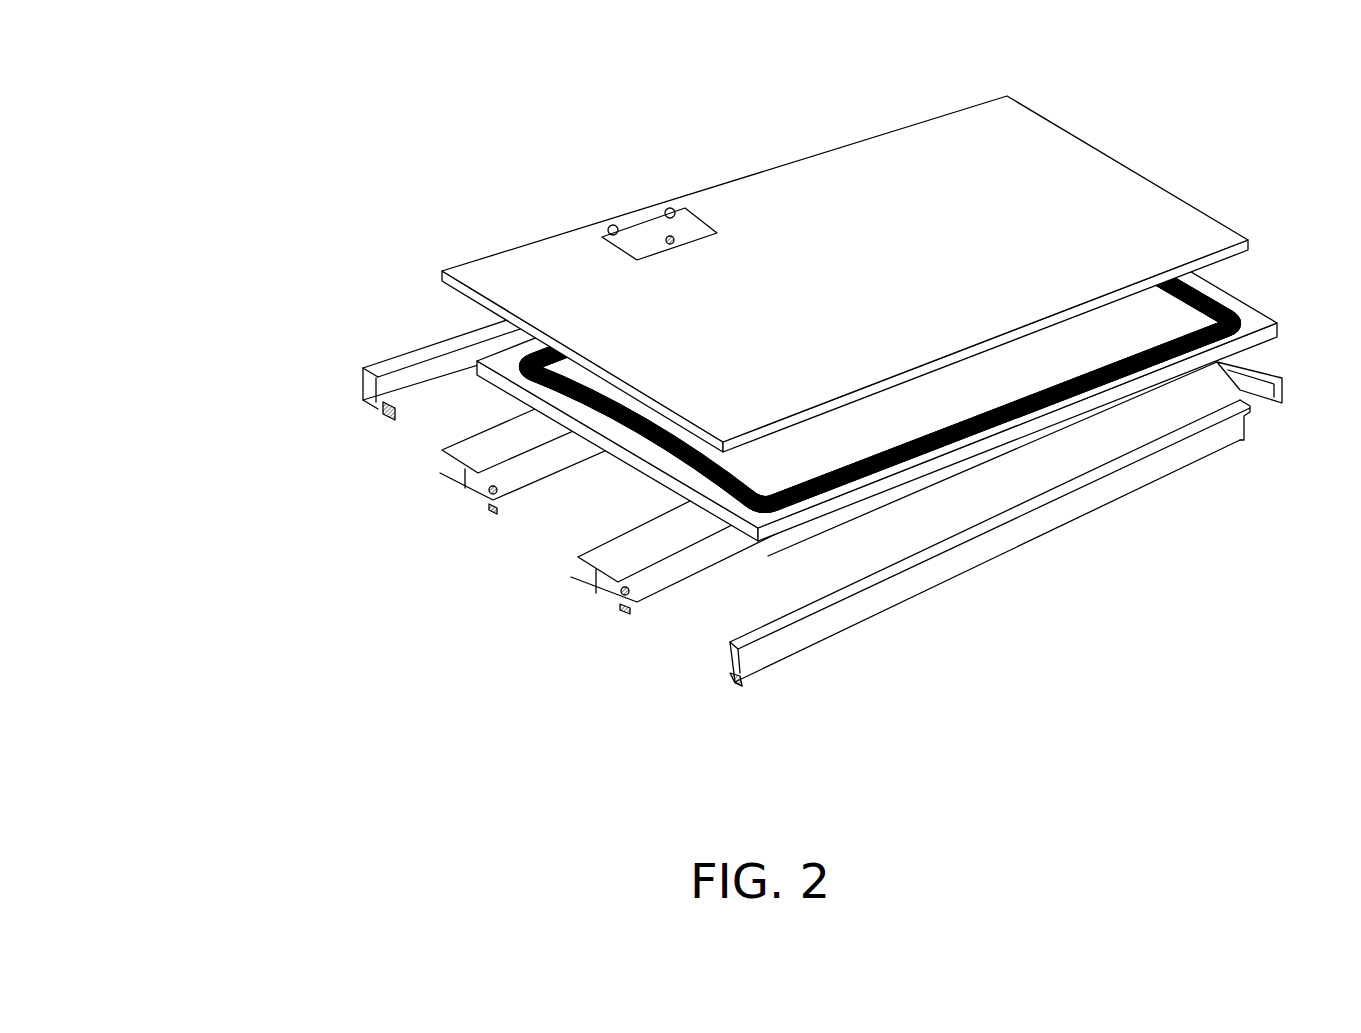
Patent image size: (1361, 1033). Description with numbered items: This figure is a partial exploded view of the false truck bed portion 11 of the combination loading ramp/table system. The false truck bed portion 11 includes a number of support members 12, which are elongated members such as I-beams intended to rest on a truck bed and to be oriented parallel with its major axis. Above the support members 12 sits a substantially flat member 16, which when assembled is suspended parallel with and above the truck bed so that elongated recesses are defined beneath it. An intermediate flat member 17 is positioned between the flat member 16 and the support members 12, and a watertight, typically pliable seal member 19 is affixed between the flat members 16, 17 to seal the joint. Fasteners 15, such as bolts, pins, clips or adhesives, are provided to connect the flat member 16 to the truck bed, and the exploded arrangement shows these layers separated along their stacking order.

The false truck bed portion 11 is at (156, 456).
The support members 12 is at (668, 583).
The fasteners 15 is at (477, 483).
The substantially flat member 16 is at (1032, 140).
The intermediate flat member 17 is at (1253, 318).
The seal member 19 is at (1135, 368).